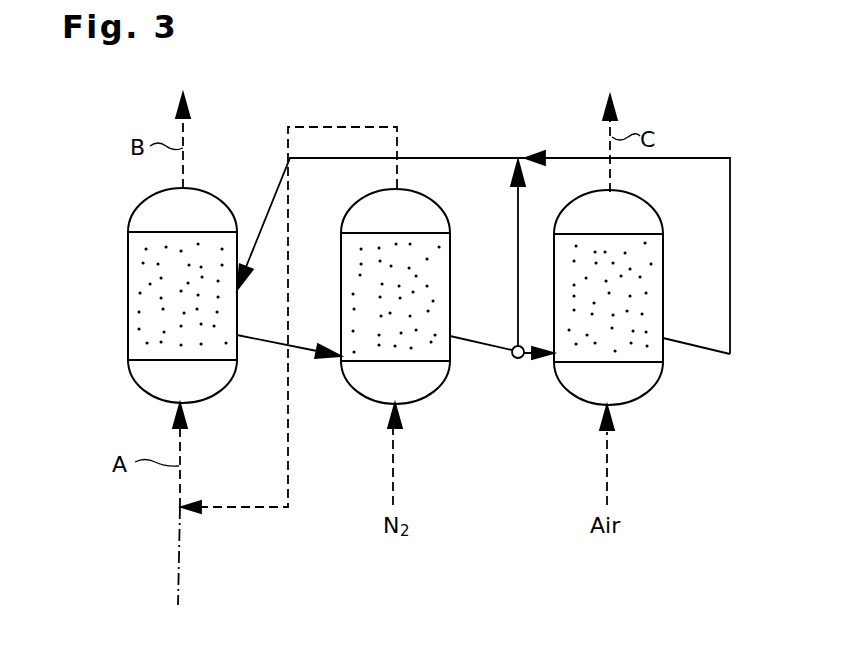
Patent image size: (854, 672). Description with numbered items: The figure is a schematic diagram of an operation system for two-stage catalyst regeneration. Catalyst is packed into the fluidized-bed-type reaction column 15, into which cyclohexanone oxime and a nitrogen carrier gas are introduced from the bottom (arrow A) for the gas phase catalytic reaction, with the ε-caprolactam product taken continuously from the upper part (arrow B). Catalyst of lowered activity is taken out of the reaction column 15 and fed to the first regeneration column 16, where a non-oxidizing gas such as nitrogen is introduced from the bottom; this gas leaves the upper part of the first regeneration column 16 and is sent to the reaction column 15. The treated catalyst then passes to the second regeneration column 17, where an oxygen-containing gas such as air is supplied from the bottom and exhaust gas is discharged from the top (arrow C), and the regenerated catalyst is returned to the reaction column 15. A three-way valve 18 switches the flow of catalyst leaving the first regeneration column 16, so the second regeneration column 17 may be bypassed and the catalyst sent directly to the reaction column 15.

The fluidized-bed-type reaction column 15 is at (128, 302).
The first regeneration column 16 is at (450, 262).
The second regeneration column 17 is at (663, 257).
The three-way valve 18 is at (518, 358).